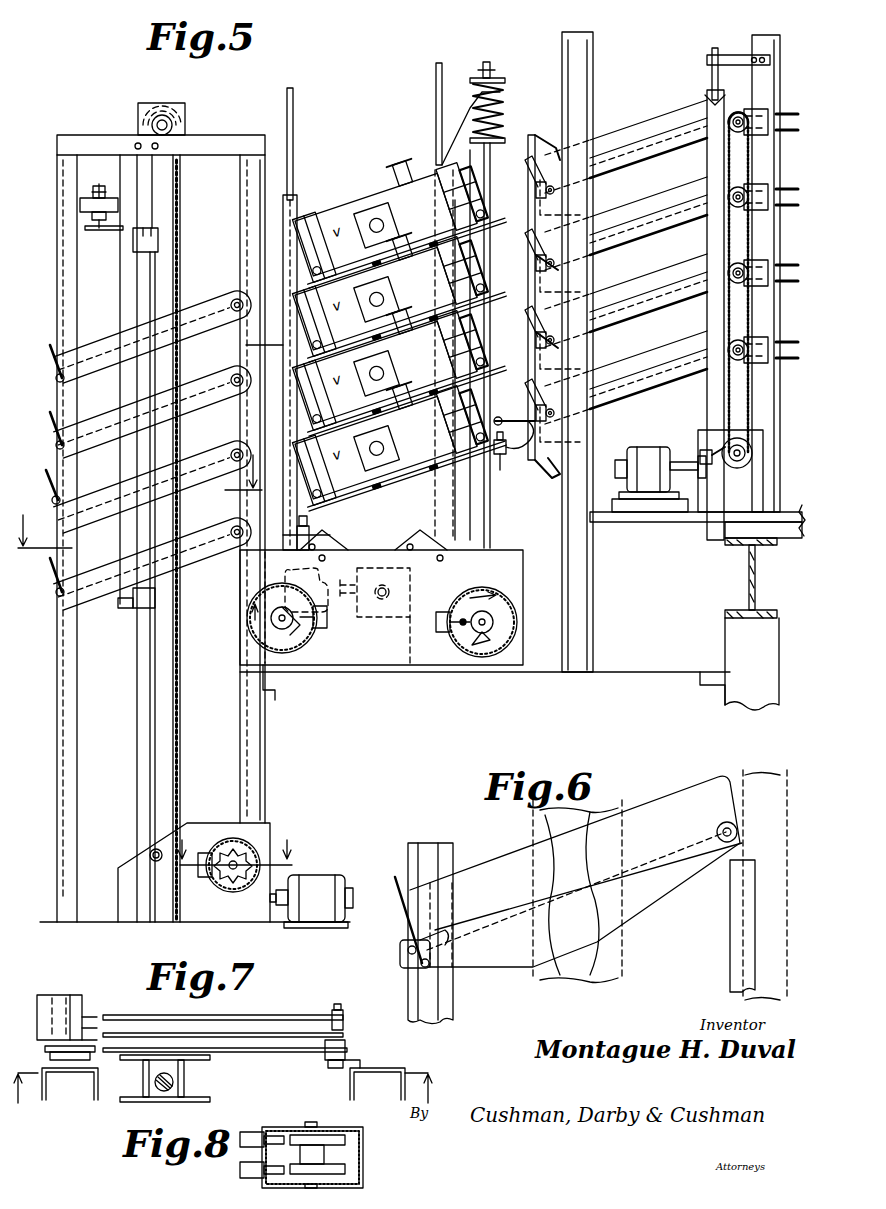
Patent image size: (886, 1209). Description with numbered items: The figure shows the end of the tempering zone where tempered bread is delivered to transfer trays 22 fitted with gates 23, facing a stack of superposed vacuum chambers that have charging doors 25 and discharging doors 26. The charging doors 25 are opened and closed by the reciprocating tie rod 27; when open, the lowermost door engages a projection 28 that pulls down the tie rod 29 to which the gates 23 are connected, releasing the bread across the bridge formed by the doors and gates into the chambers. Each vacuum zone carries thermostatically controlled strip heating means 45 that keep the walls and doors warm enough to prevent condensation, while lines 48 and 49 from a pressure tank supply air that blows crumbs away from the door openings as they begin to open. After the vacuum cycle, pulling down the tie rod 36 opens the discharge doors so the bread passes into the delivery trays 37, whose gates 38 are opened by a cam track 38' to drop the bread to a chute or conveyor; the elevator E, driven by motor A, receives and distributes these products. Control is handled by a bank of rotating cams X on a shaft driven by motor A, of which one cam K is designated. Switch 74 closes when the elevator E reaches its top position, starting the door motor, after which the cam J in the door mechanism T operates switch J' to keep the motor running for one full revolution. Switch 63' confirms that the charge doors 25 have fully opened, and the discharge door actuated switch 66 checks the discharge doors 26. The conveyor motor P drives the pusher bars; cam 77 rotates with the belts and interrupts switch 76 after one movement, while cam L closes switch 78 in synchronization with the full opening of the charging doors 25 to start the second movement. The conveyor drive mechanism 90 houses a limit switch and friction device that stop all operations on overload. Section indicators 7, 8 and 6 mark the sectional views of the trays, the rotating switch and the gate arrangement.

In FIG. 5, the switch 74 is at (114, 200).
In FIG. 5, the elevator E is at (166, 268).
In FIG. 7, the elevator E is at (172, 1068).
In FIG. 5, the delivery tray 37 is at (100, 335).
In FIG. 6, the delivery tray 37 is at (670, 802).
In FIG. 7, the delivery tray 37 is at (255, 1030).
In FIG. 5, the gate 38 is at (41, 470).
In FIG. 6, the gate 38 is at (405, 922).
In FIG. 7, the gate 38 is at (67, 1031).
In FIG. 5, the tie rod 36 is at (246, 345).
In FIG. 5, the section line 7 is at (142, 492).
In FIG. 5, the line 48 is at (293, 132).
In FIG. 5, the line 49 is at (436, 80).
In FIG. 5, the charging door 25 is at (432, 196).
In FIG. 5, the discharging door 26 is at (318, 246).
In FIG. 5, the heating means 45 is at (378, 262).
In FIG. 5, the discharge door actuated switch 66 is at (307, 533).
In FIG. 5, the gate 23 is at (530, 222).
In FIG. 5, the tie rod 27 is at (532, 258).
In FIG. 5, the tie rod 29 is at (530, 350).
In FIG. 5, the projection 28 is at (527, 447).
In FIG. 5, the switch 63' is at (514, 450).
In FIG. 5, the transfer tray 22 is at (632, 205).
In FIG. 5, the conveyor motor P is at (645, 452).
In FIG. 5, the switch 76 is at (700, 448).
In FIG. 5, the cam 77 is at (742, 468).
In FIG. 5, the conveyor drive mechanism 90 is at (722, 515).
In FIG. 5, the mechanism T is at (500, 560).
In FIG. 5, the cam J is at (287, 618).
In FIG. 5, the switch J' is at (324, 623).
In FIG. 5, the cam L is at (475, 636).
In FIG. 5, the switch 78 is at (440, 612).
In FIG. 5, the cam K is at (250, 850).
In FIG. 8, the cam K is at (340, 1160).
In FIG. 5, the bank of rotating cams X is at (252, 846).
In FIG. 5, the section line 8 is at (240, 846).
In FIG. 5, the motor A is at (318, 874).
In FIG. 6, the cam track 38' is at (737, 885).
In FIG. 7, the cam track 38' is at (365, 1067).
In FIG. 7, the section line 6 is at (223, 1093).